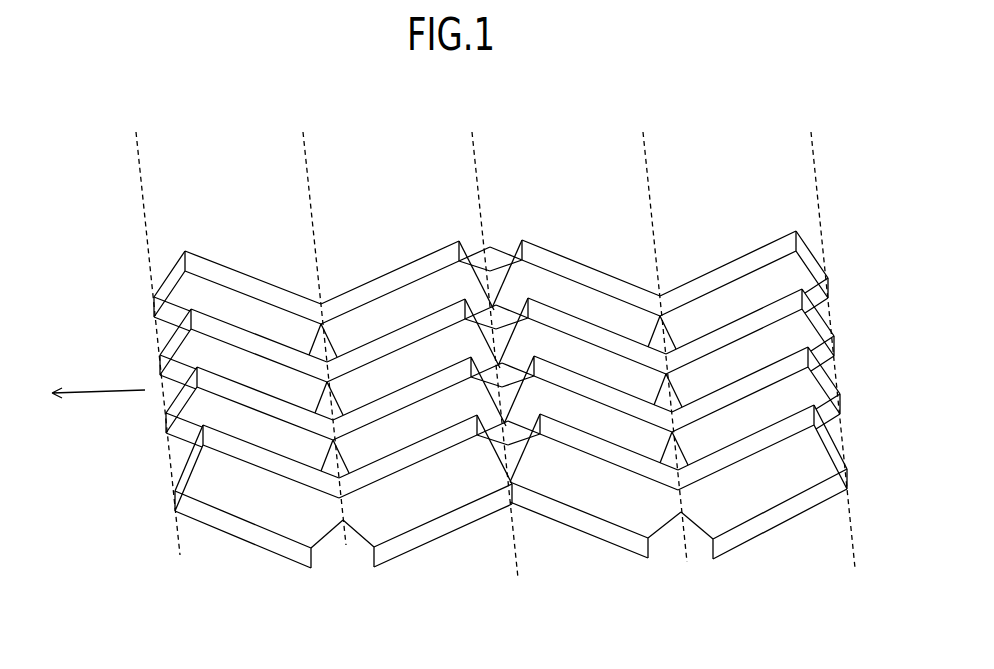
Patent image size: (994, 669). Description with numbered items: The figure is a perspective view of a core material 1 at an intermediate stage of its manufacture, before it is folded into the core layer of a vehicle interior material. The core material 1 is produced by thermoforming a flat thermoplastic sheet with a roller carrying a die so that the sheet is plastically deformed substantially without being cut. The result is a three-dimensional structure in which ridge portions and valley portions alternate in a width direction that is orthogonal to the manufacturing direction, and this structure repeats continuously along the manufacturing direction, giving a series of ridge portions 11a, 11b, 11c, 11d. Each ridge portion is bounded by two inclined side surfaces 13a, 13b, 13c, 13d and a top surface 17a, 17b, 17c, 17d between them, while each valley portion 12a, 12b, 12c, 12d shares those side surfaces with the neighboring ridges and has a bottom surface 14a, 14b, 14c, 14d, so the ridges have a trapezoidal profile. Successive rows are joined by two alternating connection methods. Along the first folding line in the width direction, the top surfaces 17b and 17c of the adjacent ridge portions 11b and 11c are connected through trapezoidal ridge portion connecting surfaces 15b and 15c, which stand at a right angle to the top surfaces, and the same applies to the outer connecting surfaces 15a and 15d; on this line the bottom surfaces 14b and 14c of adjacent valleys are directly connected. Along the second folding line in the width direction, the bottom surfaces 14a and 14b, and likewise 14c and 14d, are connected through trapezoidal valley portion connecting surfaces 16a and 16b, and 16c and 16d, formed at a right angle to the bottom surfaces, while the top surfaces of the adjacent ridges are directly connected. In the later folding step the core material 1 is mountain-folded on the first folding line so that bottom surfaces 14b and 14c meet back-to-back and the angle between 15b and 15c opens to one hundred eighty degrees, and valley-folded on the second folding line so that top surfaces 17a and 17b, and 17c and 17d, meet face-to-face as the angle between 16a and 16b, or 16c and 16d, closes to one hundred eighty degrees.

The core material 1 is at (694, 149).
The ridge portion 11a is at (151, 294).
The ridge portion 11b is at (505, 550).
The ridge portion 11c is at (560, 552).
The ridge portion 11d is at (826, 263).
The valley portion 12a is at (151, 322).
The valley portion 12b is at (373, 321).
The valley portion 12c is at (562, 287).
The valley portion 12d is at (753, 291).
The side surface 13a is at (213, 492).
The side surface 13b is at (460, 490).
The side surface 13c is at (572, 495).
The side surface 13d is at (795, 487).
The bottom surface 14a is at (262, 537).
The bottom surface 14b is at (413, 543).
The bottom surface 14c is at (617, 540).
The bottom surface 14d is at (760, 540).
The ridge portion connecting surface 15a is at (200, 428).
The ridge portion connecting surface 15b is at (483, 265).
The ridge portion connecting surface 15c is at (500, 275).
The ridge portion connecting surface 15d is at (838, 440).
The valley portion connecting surface 16a is at (322, 565).
The valley portion connecting surface 16b is at (362, 568).
The valley portion connecting surface 16c is at (668, 568).
The valley portion connecting surface 16d is at (692, 566).
The top surface 17a is at (250, 262).
The top surface 17b is at (455, 255).
The top surface 17c is at (588, 255).
The top surface 17d is at (722, 250).